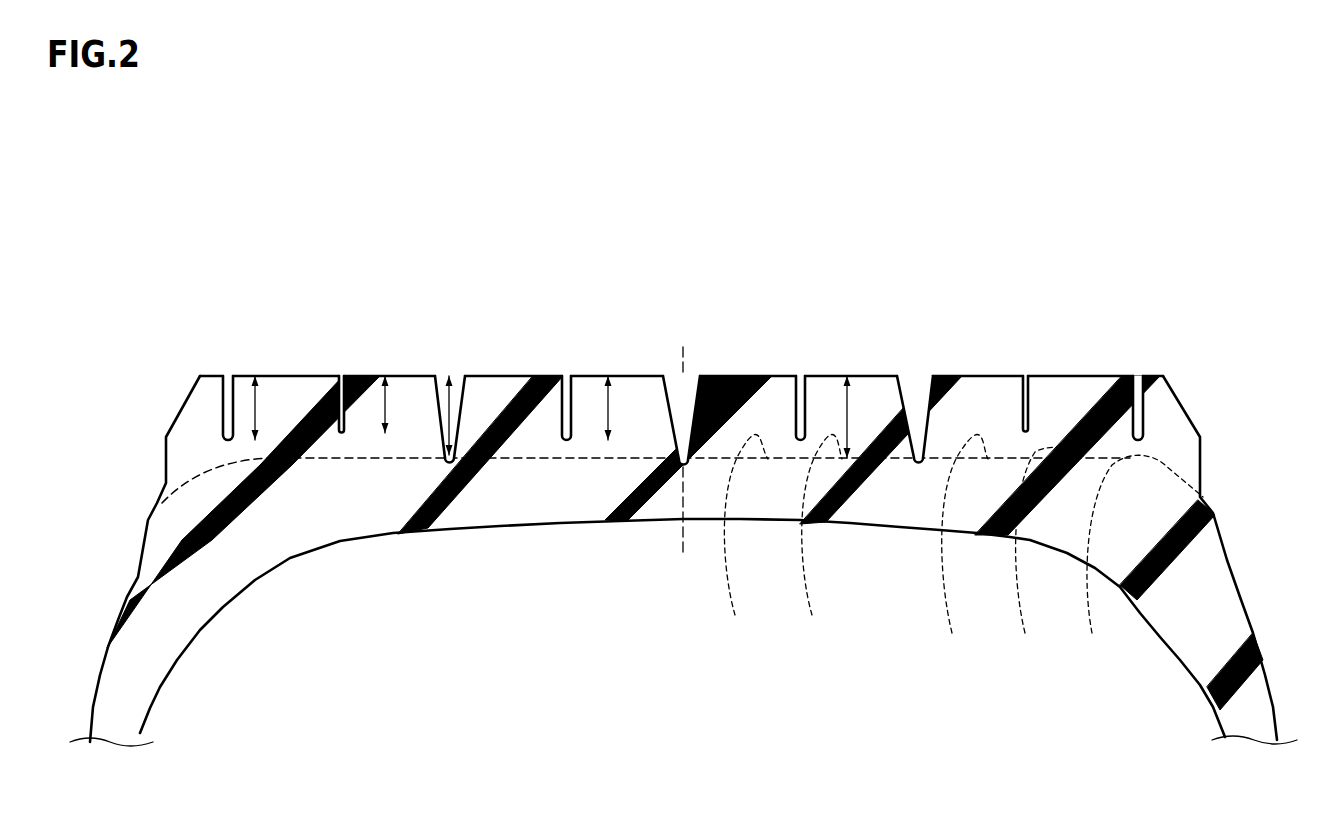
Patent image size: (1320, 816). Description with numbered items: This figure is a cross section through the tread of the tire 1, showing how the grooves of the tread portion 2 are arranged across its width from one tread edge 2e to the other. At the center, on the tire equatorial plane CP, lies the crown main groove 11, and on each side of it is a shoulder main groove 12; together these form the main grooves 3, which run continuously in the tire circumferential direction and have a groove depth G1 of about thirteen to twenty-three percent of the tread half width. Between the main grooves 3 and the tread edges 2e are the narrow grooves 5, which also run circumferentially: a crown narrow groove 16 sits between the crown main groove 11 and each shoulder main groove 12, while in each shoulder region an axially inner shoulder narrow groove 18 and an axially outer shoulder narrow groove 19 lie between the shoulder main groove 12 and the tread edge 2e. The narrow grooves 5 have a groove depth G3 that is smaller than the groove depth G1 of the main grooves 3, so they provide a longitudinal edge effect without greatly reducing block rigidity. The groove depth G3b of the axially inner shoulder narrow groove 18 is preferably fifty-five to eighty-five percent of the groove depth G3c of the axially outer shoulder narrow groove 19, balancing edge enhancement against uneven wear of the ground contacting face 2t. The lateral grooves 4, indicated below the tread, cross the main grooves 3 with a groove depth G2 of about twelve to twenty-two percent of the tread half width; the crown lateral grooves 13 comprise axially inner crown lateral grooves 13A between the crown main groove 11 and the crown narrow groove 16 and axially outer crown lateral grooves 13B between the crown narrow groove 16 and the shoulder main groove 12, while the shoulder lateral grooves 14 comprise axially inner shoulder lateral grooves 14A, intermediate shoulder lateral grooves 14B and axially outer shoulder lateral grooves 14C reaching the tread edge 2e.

The tire 1 is at (1195, 225).
The tread portion 2 is at (747, 358).
The tread edge 2e is at (199, 376).
The ground contacting face 2t is at (1078, 377).
The main groove 3 is at (674, 359).
The crown main groove 11 is at (675, 389).
The shoulder main groove 12 is at (440, 396).
The narrow groove 5 is at (680, 358).
The crown narrow groove 16 is at (565, 386).
The axially inner shoulder narrow groove 18 is at (336, 384).
The axially outer shoulder narrow groove 19 is at (227, 383).
The lateral groove 4 is at (958, 575).
The crown lateral groove 13 is at (847, 637).
The axially inner crown lateral groove 13A is at (742, 541).
The axially outer crown lateral groove 13B is at (815, 541).
The shoulder lateral groove 14 is at (1117, 653).
The axially inner shoulder lateral groove 14A is at (961, 550).
The intermediate shoulder lateral groove 14B is at (1041, 556).
The axially outer shoulder lateral groove 14C is at (1135, 560).
The groove depth of main groove G1 is at (450, 416).
The groove depth of lateral groove G2 is at (850, 410).
The groove depth of narrow groove G3 is at (423, 536).
The groove depth of axially inner shoulder narrow groove G3b is at (388, 408).
The groove depth of axially outer shoulder narrow groove G3c is at (257, 410).
The tire equatorial plane CP is at (684, 465).